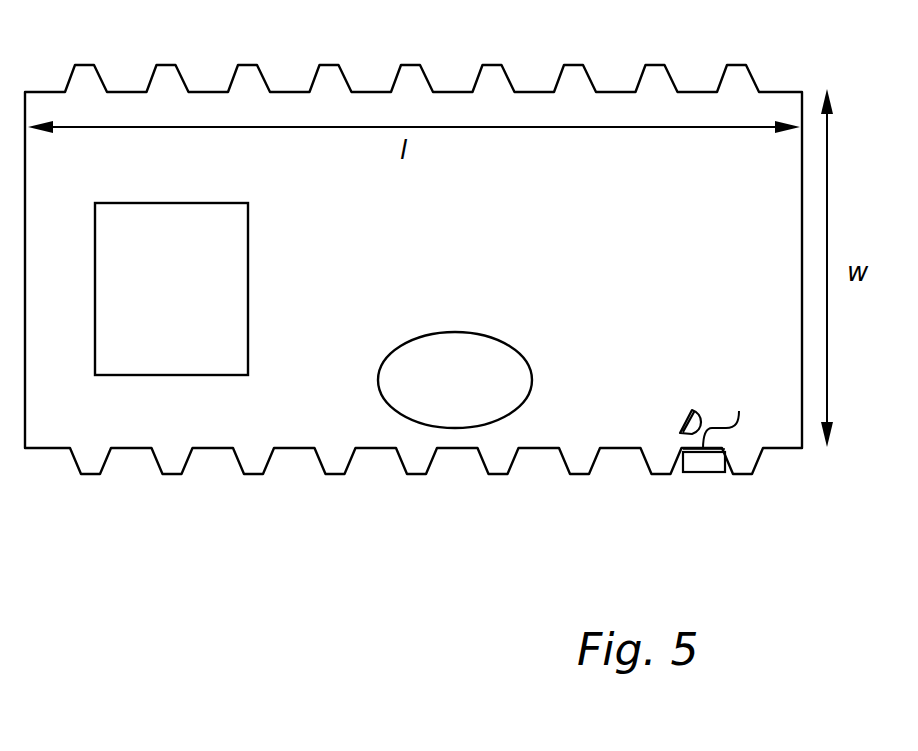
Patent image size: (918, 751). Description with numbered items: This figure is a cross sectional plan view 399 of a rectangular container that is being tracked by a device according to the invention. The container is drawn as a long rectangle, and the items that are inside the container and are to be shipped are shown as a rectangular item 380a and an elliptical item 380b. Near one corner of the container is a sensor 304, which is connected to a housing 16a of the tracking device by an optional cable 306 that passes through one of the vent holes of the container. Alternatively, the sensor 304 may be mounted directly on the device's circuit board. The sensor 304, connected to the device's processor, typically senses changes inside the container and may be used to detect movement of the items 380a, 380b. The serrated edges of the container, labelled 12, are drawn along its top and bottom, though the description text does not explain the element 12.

The pins / leads of chip package 12 is at (183, 80).
The item 380a is at (249, 258).
The item 380b is at (400, 352).
The sensor 304 is at (699, 410).
The cable 306 is at (743, 416).
The housing 16a is at (707, 473).
The cross sectional plan view 399 is at (215, 572).